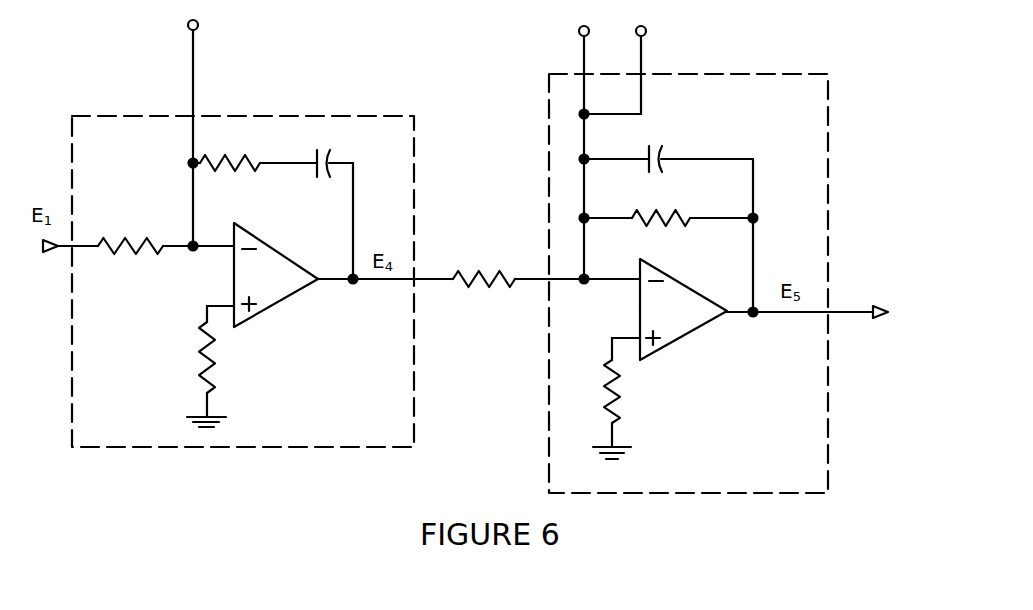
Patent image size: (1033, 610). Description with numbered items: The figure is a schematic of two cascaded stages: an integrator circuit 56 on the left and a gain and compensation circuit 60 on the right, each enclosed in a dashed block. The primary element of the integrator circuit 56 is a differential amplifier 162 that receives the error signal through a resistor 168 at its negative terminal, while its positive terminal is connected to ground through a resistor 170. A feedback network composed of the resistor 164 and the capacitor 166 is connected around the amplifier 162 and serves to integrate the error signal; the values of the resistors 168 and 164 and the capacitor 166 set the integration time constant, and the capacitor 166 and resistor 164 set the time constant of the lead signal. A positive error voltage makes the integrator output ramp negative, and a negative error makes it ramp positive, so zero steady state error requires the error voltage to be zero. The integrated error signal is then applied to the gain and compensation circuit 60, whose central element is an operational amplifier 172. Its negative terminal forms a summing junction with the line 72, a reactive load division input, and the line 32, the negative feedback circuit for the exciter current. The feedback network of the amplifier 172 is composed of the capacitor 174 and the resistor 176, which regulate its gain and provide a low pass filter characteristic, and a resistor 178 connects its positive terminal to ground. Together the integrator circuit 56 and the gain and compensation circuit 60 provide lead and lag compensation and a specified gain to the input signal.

The integrator circuit 56 is at (333, 116).
The gain and compensation circuit 60 is at (830, 90).
The line 72 is at (584, 47).
The line 32 is at (641, 50).
The differential amplifier 162 is at (258, 312).
The resistor 164 is at (233, 170).
The capacitor 166 is at (324, 166).
The resistor 168 is at (131, 252).
The resistor 170 is at (211, 374).
The operational amplifier 172 is at (688, 333).
The capacitor 174 is at (655, 150).
The resistor 176 is at (660, 214).
The resistor 178 is at (617, 395).